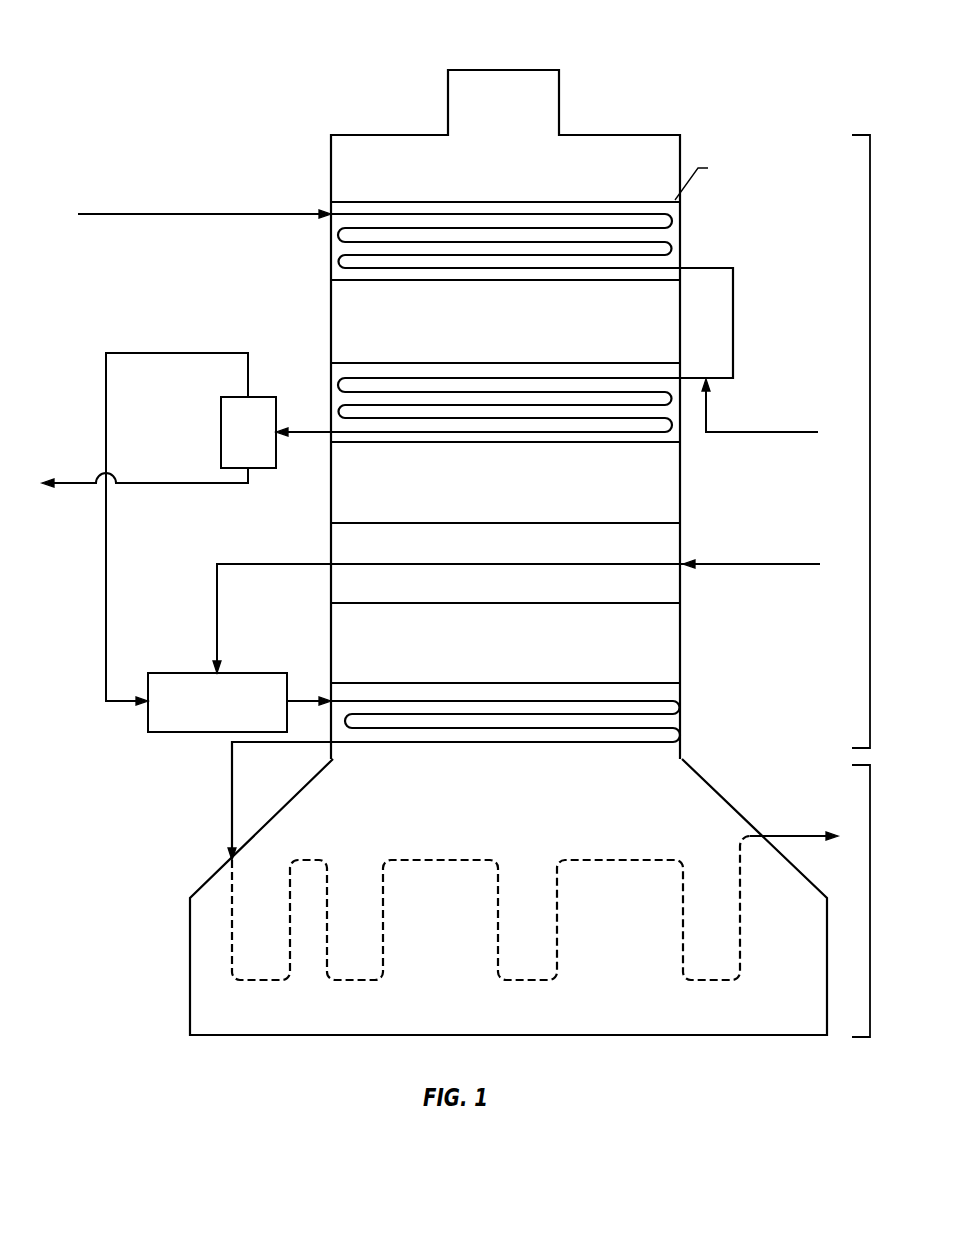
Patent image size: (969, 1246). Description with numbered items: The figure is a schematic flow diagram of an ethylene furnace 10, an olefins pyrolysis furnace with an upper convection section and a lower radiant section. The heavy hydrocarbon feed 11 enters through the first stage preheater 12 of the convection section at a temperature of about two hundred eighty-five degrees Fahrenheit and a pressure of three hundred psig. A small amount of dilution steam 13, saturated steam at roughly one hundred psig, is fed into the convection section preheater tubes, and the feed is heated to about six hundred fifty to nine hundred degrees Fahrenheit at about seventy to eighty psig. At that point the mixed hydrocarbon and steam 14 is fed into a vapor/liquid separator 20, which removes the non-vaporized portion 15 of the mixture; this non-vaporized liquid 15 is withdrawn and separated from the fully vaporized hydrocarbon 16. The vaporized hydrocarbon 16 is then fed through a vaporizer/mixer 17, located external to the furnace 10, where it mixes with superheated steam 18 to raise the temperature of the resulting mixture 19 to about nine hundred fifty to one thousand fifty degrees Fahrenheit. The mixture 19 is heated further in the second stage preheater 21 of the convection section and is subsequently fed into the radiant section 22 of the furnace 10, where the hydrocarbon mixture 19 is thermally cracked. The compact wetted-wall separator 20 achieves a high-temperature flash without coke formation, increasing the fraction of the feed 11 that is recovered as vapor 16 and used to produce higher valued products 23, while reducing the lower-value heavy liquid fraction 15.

The ethylene furnace 10 is at (699, 62).
The heavy hydrocarbon feed 11 is at (143, 219).
The first stage preheater 12 is at (333, 268).
The dilution steam 13 is at (760, 433).
The mixed hydrocarbon and steam 14 is at (315, 428).
The non-vaporized portion 15 is at (92, 478).
The vaporized hydrocarbon 16 is at (106, 575).
The vaporizer/mixer 17 is at (198, 673).
The superheated steam 18 is at (762, 568).
The mixture 19 is at (312, 700).
The vapor/liquid separator 20 is at (221, 430).
The second stage preheater 21 is at (683, 713).
The radiant section 22 is at (190, 945).
The higher valued products 23 is at (780, 832).